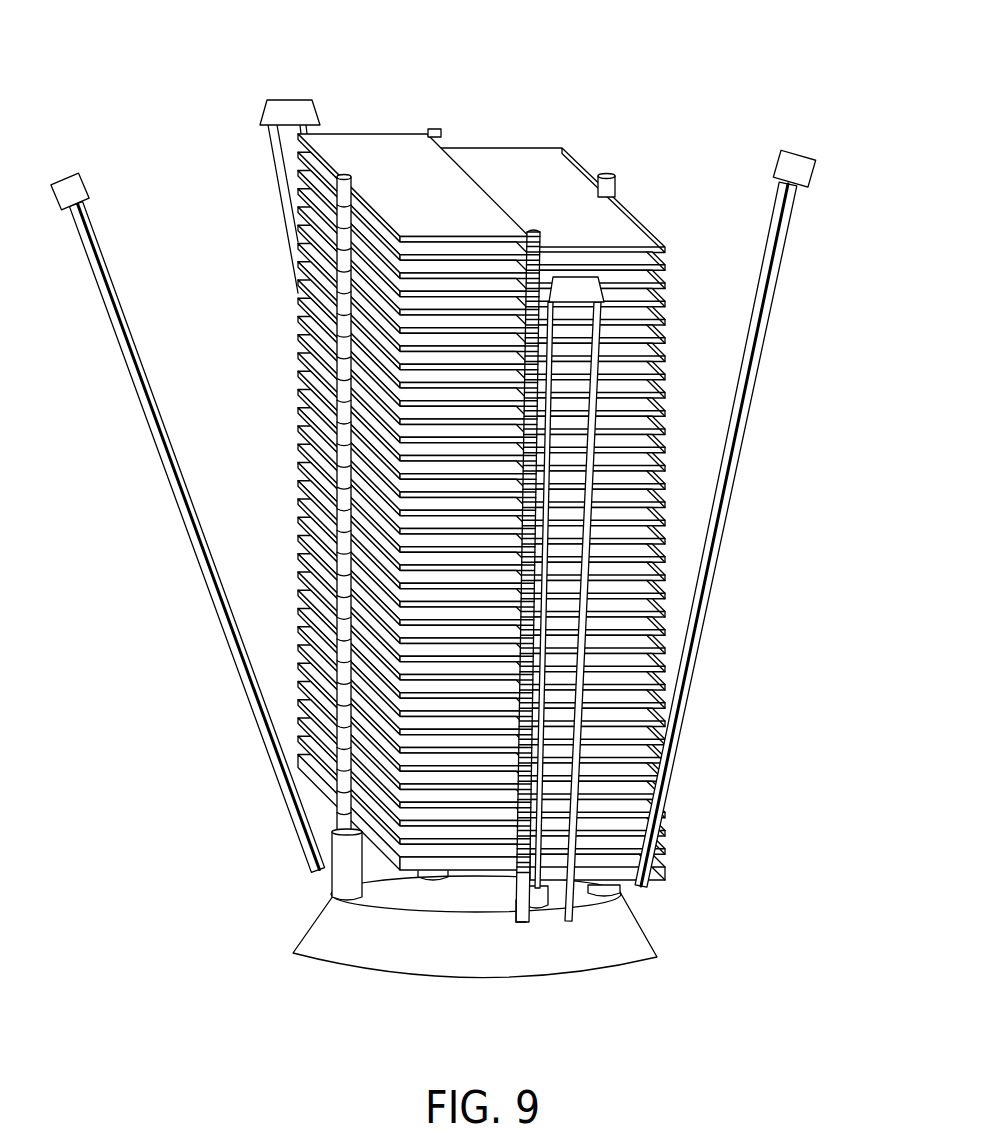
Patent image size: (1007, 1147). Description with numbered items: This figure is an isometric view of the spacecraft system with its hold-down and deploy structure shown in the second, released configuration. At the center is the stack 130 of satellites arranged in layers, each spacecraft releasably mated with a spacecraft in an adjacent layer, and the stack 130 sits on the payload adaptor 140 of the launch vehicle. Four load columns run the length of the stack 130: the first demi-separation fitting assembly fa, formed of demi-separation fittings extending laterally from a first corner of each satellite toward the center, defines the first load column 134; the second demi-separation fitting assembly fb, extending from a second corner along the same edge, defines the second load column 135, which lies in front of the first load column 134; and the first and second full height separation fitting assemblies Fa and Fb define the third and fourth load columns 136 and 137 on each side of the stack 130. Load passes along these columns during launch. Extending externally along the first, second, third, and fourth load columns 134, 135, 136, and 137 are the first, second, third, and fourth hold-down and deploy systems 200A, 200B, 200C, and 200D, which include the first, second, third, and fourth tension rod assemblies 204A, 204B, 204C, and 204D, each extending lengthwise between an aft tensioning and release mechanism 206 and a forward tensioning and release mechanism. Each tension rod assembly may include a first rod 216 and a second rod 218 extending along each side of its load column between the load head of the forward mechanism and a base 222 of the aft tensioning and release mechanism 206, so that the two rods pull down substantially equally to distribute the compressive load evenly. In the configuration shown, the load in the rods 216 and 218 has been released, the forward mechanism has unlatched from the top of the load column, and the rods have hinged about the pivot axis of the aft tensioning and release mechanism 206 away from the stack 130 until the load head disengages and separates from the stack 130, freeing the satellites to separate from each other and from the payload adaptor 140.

The stack 130 is at (571, 133).
The first load column 134 is at (452, 134).
The second load column 135 is at (548, 262).
The third load column 136 is at (323, 373).
The fourth load column 137 is at (626, 180).
The payload adaptor 140 is at (618, 932).
The first hold-down and deploy system 200A is at (294, 88).
The second hold-down and deploy system 200B is at (608, 370).
The third hold-down and deploy system 200C is at (108, 172).
The fourth hold-down and deploy system 200D is at (800, 146).
The first tension rod assembly 204A is at (268, 173).
The second tension rod assembly 204B is at (588, 719).
The third tension rod assembly 204C is at (128, 415).
The fourth tension rod assembly 204D is at (762, 441).
The aft tensioning and release mechanism 206 is at (511, 930).
The first rod 216 is at (513, 893).
The second rod 218 is at (580, 893).
The base 222 is at (537, 903).
The first full height separation fitting assembly Fa is at (348, 171).
The first demi-separation fitting assembly fa is at (440, 126).
The second demi-separation fitting assembly fb is at (530, 226).
The second full height separation fitting assembly Fb is at (615, 166).